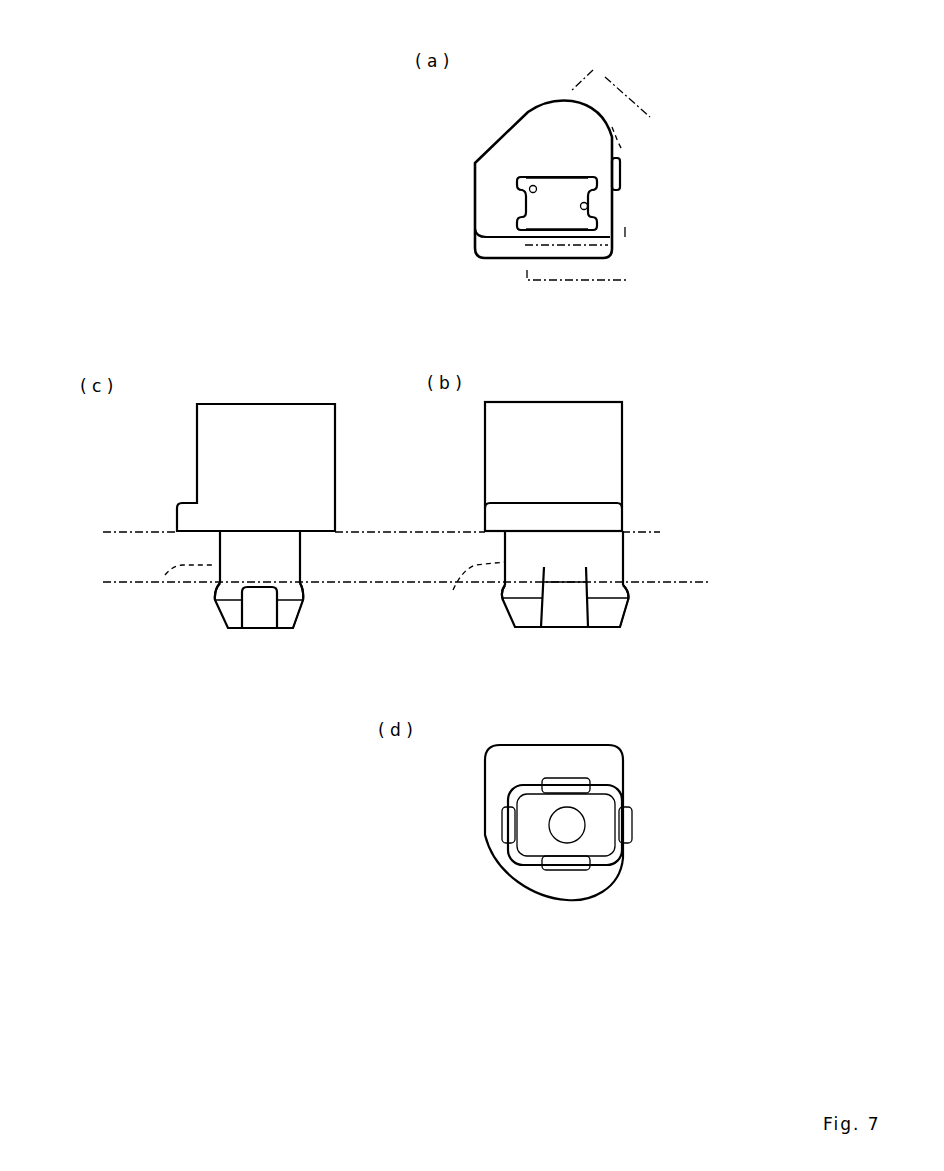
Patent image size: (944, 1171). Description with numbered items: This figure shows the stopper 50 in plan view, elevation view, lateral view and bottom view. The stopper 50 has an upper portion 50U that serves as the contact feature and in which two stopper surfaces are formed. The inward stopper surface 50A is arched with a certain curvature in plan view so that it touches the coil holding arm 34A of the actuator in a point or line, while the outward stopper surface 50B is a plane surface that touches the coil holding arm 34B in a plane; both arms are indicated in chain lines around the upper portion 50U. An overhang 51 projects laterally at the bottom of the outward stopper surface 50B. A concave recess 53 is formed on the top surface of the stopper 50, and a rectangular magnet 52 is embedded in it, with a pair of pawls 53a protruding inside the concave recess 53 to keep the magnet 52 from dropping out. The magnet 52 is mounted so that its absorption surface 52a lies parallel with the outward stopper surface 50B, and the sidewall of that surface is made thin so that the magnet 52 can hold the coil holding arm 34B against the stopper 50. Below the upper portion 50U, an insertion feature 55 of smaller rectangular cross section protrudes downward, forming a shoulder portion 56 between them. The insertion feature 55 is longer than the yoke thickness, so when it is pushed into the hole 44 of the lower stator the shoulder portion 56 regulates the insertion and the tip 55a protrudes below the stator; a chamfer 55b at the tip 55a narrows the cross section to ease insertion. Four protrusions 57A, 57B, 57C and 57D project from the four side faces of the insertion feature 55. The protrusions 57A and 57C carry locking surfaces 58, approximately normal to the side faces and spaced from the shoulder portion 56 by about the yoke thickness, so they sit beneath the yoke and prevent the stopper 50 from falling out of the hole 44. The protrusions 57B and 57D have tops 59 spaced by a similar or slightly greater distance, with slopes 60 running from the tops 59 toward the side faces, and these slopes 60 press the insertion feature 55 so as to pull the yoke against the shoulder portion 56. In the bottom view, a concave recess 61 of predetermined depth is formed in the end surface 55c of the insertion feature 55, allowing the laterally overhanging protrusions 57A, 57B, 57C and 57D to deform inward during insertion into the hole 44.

The coil holding arm 34A is at (614, 63).
The coil holding arm 34B is at (555, 282).
The hole 44 is at (317, 586).
The stopper 50 is at (593, 140).
The inward stopper surface 50A is at (590, 110).
The outward stopper surface 50B is at (580, 238).
The upper portion 50U is at (320, 478).
The overhang 51 is at (575, 258).
The magnet 52 is at (540, 205).
The absorption surface 52a is at (560, 230).
The concave recess 53 is at (557, 177).
The pawl 53a is at (535, 188).
The insertion feature 55 is at (278, 548).
The tip 55a is at (237, 623).
The chamfer 55b is at (303, 613).
The end surface 55c is at (527, 803).
The shoulder portion 56 is at (202, 533).
The protrusion 57A is at (257, 610).
The protrusion 57B is at (213, 613).
The protrusion 57C is at (633, 593).
The protrusion 57D is at (297, 607).
The locking surface 58 is at (258, 582).
The top 59 is at (303, 593).
The slope 60 is at (308, 575).
The concave recess 61 is at (552, 832).